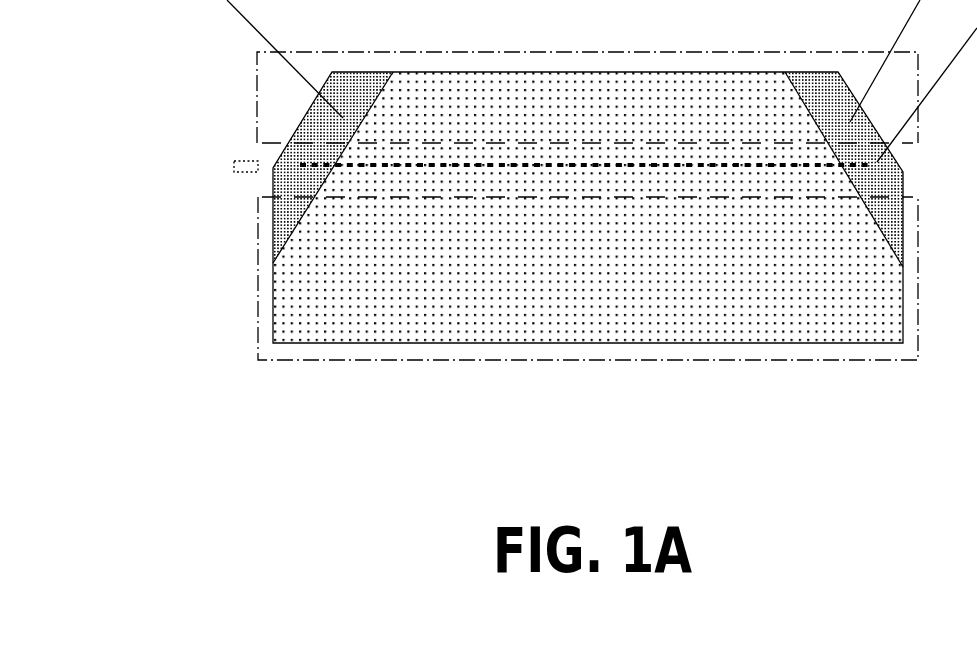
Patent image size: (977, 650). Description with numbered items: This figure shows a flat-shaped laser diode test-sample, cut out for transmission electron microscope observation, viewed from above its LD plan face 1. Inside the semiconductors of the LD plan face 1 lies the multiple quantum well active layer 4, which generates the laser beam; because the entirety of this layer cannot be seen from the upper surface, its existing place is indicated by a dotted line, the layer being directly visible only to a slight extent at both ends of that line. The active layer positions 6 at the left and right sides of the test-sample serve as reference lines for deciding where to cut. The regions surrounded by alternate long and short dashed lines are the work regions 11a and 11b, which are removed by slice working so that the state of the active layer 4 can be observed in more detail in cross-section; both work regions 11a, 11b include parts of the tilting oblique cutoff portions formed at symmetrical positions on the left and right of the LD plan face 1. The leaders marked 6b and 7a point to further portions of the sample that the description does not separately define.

The LD plan face 1 is at (618, 343).
The multiple quantum well active layer 4 is at (517, 167).
The active layer positions 6 is at (293, 166).
The side electrode portion 6b is at (224, 18).
The external electrode portion 7a is at (245, 162).
The work region 11a is at (257, 62).
The work region 11b is at (258, 320).